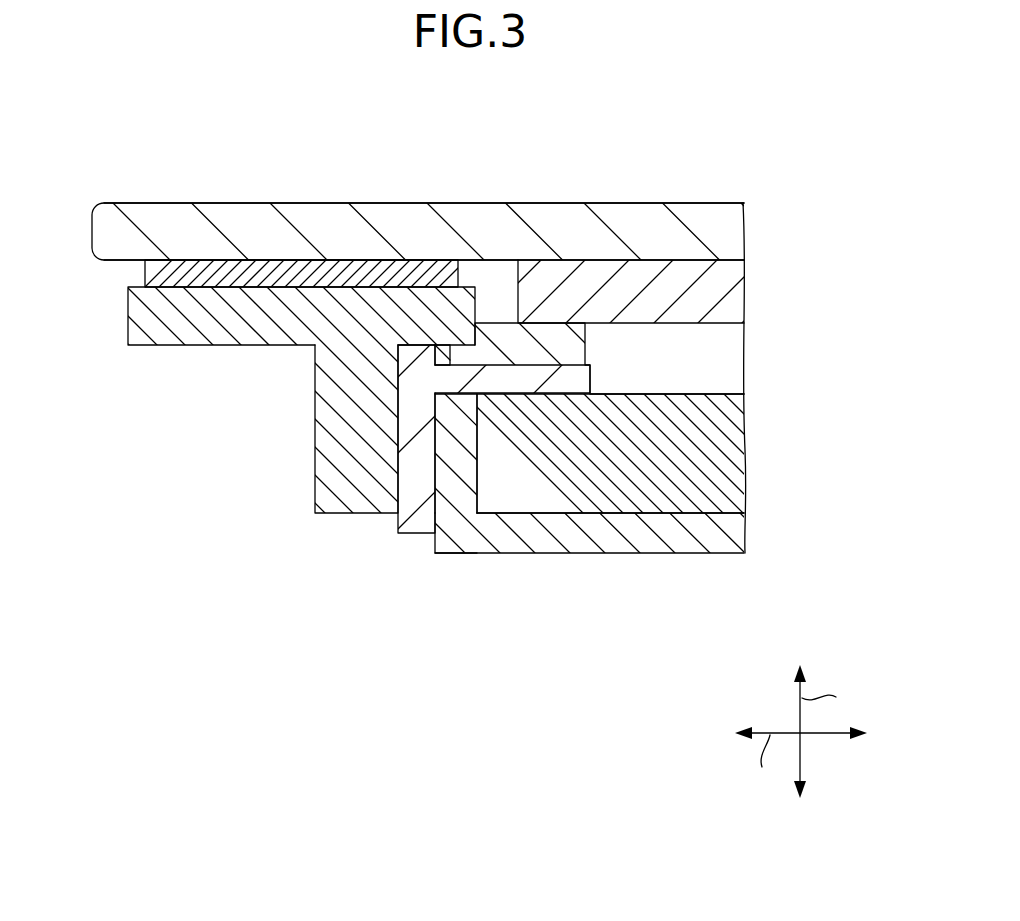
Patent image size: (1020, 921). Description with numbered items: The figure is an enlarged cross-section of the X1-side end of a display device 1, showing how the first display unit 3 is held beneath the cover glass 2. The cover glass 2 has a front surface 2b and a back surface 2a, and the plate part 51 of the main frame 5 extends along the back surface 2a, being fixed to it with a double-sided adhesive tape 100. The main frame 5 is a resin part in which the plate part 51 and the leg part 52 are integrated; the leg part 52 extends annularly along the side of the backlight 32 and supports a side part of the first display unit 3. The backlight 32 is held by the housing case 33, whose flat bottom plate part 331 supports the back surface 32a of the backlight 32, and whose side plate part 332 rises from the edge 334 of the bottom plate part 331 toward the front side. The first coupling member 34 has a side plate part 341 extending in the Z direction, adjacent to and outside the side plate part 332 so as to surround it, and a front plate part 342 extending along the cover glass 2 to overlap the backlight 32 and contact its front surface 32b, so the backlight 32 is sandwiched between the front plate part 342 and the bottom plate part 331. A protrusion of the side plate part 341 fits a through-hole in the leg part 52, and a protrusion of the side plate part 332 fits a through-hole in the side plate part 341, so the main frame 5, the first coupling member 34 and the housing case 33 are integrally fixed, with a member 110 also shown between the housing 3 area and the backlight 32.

The electronic device 1 is at (534, 124).
The cover glass 2 is at (415, 203).
The back surface of cover glass 2a is at (120, 262).
The outer surface of cover member 2b is at (140, 203).
The double-sided adhesive tape 100 is at (340, 258).
The first display unit 3 is at (682, 272).
The sealing member 110 is at (548, 335).
The main frame 5 is at (120, 333).
The plate part 51 is at (175, 323).
The leg part 52 is at (330, 417).
The backlight 32 is at (717, 455).
The back surface of backlight 32a is at (642, 513).
The front surface of backlight 32b is at (618, 388).
The housing case 33 is at (490, 565).
The bottom plate part 331 is at (577, 540).
The side plate part 332 is at (447, 440).
The edge of bottom plate part 334 is at (443, 542).
The first coupling member 34 is at (407, 545).
The side plate part 341 is at (410, 483).
The front plate part 342 is at (517, 380).